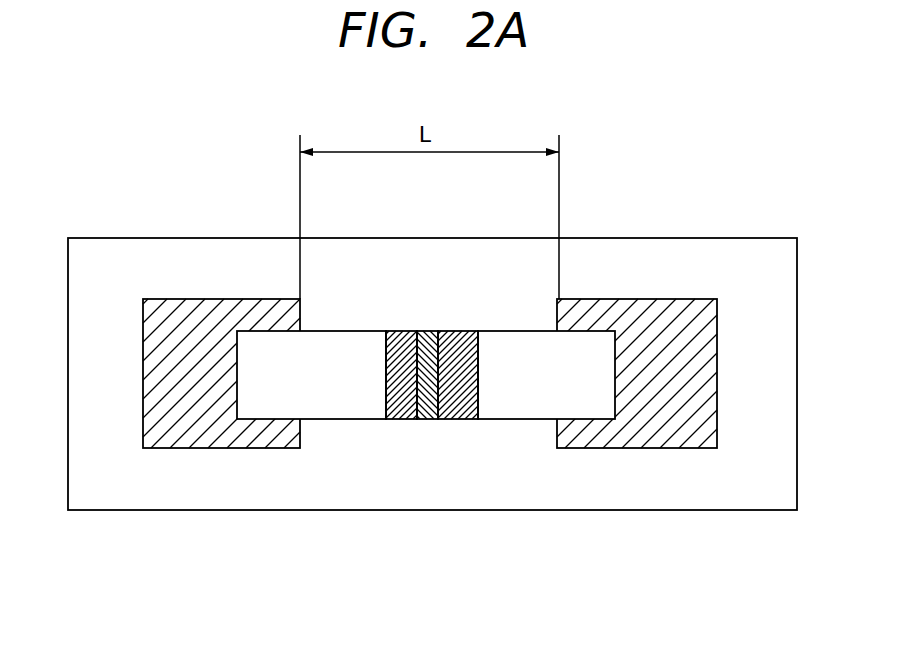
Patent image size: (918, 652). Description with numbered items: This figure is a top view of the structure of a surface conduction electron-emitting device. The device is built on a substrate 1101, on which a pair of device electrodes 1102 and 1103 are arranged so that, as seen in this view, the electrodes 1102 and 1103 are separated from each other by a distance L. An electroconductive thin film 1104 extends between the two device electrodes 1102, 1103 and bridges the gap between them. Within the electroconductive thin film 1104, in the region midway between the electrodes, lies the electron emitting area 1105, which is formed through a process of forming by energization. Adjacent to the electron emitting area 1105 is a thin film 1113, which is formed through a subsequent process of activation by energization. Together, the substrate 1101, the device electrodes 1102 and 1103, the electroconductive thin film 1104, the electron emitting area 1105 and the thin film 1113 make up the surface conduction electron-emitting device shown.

The substrate 1101 is at (752, 255).
The device electrode 1102 is at (655, 318).
The device electrode 1103 is at (194, 317).
The electroconductive thin film 1104 is at (331, 403).
The electron emitting area 1105 is at (423, 410).
The thin film 1113 is at (410, 322).